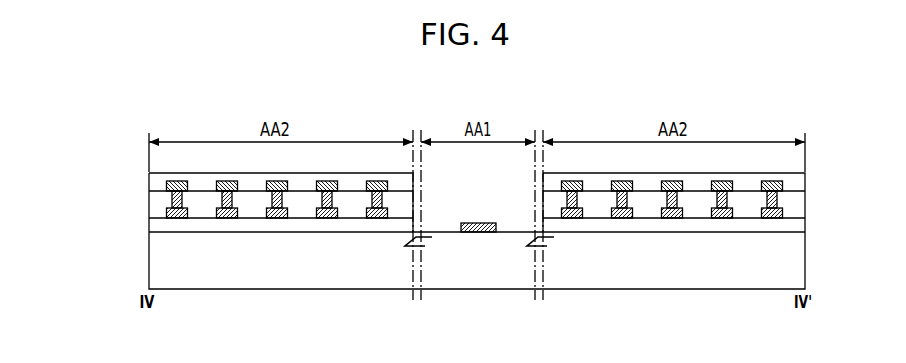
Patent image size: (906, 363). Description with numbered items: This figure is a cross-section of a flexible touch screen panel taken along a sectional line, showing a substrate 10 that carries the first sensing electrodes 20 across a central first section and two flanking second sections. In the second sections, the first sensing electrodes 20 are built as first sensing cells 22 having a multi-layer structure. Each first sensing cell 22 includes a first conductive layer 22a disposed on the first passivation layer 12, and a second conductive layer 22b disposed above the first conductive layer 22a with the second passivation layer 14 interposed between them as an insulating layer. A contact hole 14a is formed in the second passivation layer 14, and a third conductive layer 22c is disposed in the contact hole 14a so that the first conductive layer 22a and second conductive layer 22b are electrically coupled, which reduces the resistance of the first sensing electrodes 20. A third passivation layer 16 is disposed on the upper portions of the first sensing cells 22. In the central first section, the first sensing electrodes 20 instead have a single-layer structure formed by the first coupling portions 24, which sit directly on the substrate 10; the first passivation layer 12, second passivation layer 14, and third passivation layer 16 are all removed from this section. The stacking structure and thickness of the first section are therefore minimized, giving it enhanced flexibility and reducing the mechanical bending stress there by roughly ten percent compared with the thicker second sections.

The substrate 10 is at (798, 263).
The first passivation layer 12 is at (798, 226).
The second passivation layer 14 is at (798, 208).
The contact hole 14a is at (186, 199).
The third passivation layer 16 is at (798, 182).
The first sensing electrodes 20 is at (60, 193).
The first sensing cells 22 is at (97, 173).
The first conductive layer 22a is at (166, 212).
The second conductive layer 22b is at (166, 185).
The third conductive layer 22c is at (172, 202).
The first coupling portions 24 is at (472, 233).